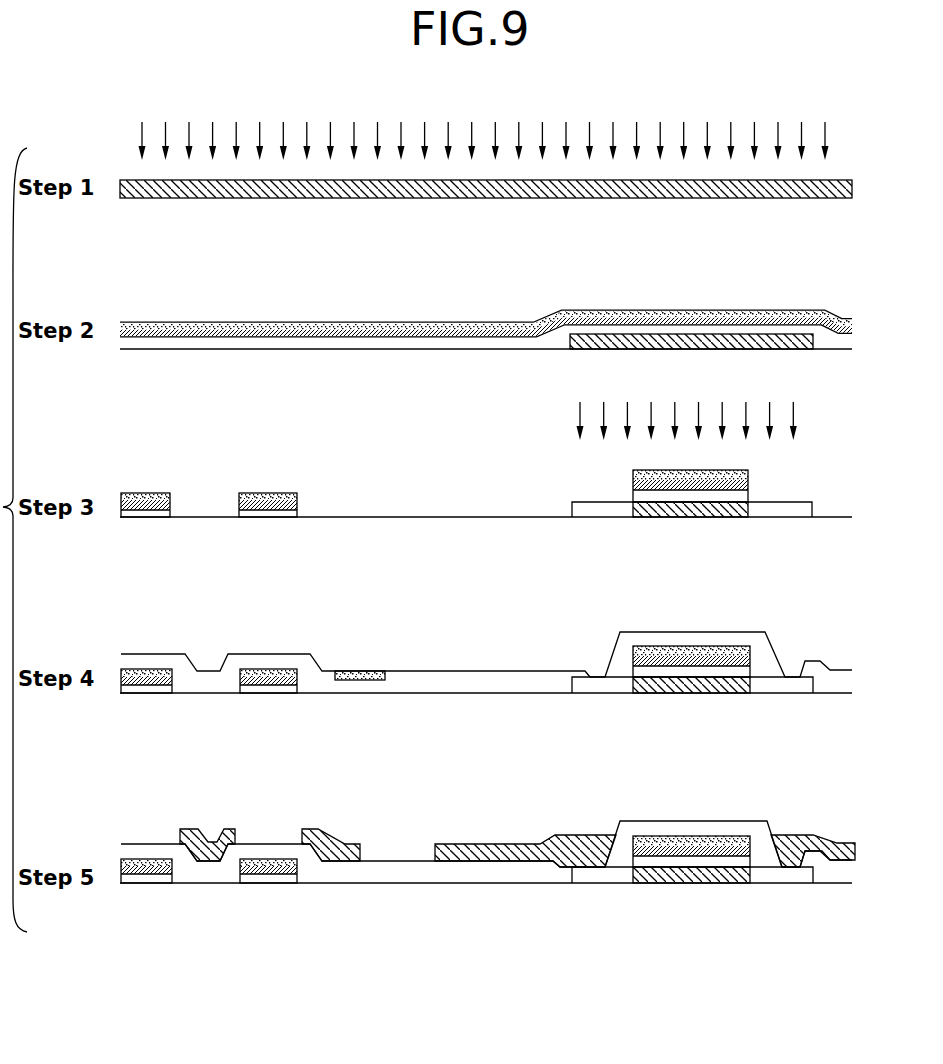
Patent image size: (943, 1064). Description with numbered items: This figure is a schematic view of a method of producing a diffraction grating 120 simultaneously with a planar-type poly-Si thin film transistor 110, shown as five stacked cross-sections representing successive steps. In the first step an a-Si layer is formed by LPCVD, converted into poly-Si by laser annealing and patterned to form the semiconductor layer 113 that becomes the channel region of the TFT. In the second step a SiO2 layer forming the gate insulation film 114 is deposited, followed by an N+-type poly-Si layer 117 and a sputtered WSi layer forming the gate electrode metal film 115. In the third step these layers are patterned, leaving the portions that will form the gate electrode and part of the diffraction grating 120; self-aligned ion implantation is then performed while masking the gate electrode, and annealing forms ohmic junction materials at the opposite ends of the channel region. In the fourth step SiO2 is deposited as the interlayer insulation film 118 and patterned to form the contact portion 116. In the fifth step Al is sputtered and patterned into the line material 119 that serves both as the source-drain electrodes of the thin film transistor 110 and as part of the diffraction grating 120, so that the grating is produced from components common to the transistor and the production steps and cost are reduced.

The thin film transistor 110 is at (674, 915).
The semiconductor layer 113 is at (683, 199).
The gate insulation film 114 is at (521, 352).
The gate electrode metal film 115 is at (488, 320).
The contact portion 116 is at (791, 675).
The metal layer 117 is at (385, 340).
The interlayer insulation film 118 is at (738, 641).
The pixel electrode 119 is at (228, 829).
The diffraction grating 120 is at (190, 915).